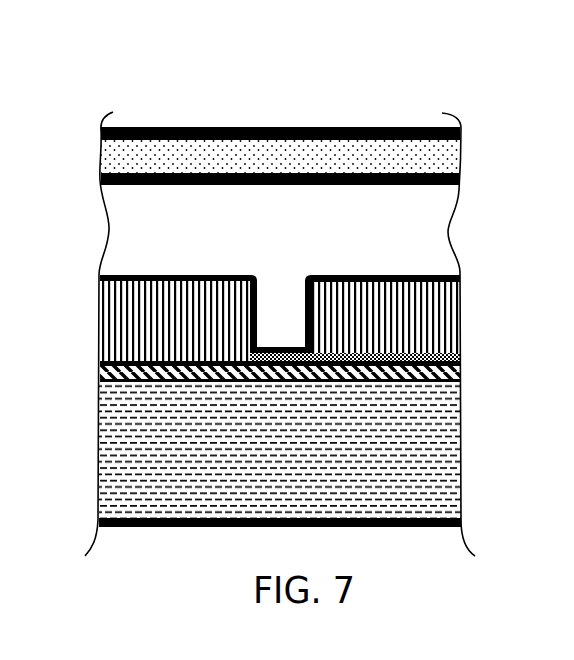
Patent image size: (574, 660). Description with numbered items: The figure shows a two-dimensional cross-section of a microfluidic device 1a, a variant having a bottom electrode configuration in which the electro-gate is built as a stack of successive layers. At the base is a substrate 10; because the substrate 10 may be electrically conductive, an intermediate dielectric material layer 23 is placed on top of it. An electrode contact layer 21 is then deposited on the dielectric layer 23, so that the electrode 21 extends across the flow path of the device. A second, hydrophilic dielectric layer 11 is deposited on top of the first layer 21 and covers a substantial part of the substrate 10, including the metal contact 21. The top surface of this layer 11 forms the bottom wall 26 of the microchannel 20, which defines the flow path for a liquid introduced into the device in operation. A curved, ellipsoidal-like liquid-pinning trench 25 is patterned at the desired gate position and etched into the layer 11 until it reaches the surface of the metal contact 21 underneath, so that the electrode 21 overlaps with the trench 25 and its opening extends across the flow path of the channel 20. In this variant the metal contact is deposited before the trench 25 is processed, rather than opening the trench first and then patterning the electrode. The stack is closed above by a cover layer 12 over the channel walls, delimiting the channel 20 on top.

The microfluidic device 1a is at (443, 566).
The substrate 10 is at (100, 488).
The dielectric layer 11 is at (100, 330).
The upper substrate 12 is at (378, 123).
The microchannel 20 is at (241, 212).
The electrode 21 is at (447, 350).
The intermediate dielectric material layer 23 is at (97, 382).
The liquid-pinning trench 25 is at (286, 286).
The bottom wall 26 is at (179, 276).